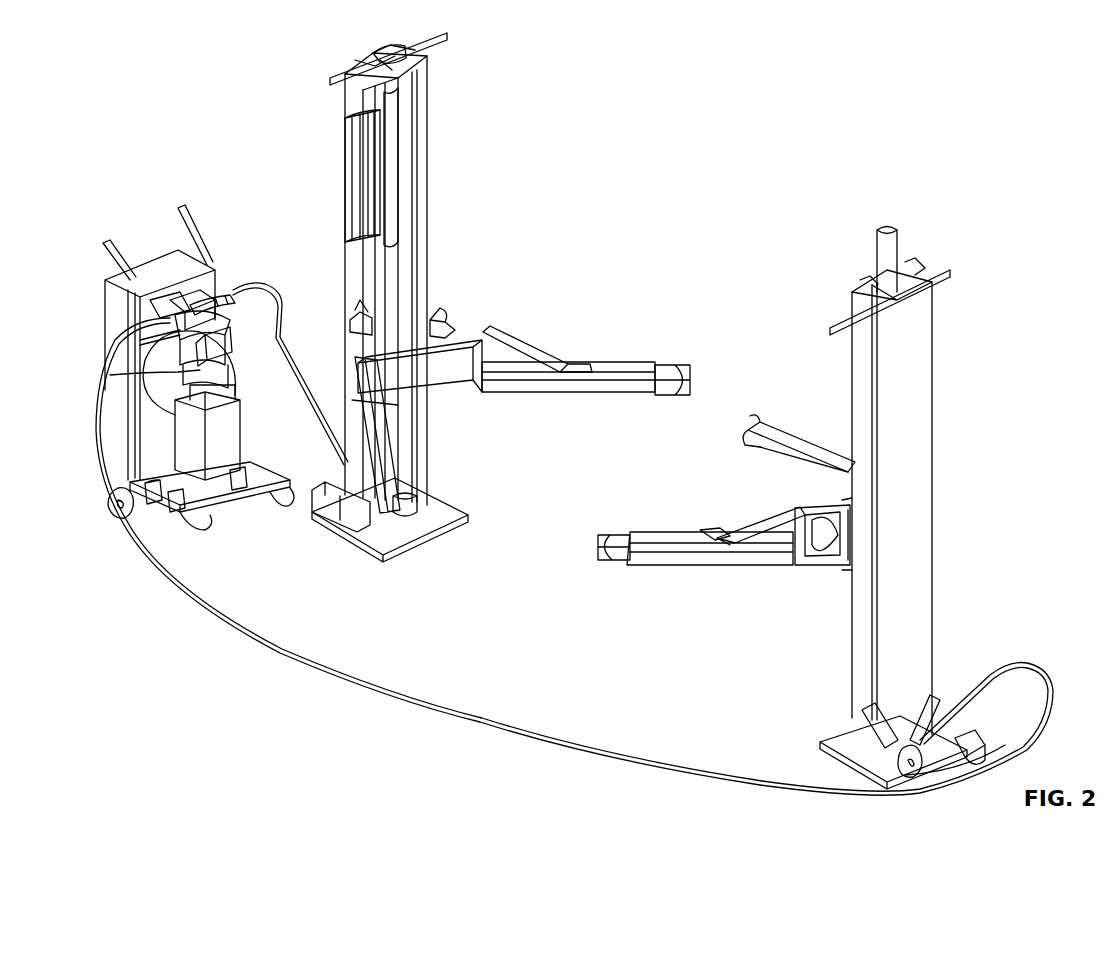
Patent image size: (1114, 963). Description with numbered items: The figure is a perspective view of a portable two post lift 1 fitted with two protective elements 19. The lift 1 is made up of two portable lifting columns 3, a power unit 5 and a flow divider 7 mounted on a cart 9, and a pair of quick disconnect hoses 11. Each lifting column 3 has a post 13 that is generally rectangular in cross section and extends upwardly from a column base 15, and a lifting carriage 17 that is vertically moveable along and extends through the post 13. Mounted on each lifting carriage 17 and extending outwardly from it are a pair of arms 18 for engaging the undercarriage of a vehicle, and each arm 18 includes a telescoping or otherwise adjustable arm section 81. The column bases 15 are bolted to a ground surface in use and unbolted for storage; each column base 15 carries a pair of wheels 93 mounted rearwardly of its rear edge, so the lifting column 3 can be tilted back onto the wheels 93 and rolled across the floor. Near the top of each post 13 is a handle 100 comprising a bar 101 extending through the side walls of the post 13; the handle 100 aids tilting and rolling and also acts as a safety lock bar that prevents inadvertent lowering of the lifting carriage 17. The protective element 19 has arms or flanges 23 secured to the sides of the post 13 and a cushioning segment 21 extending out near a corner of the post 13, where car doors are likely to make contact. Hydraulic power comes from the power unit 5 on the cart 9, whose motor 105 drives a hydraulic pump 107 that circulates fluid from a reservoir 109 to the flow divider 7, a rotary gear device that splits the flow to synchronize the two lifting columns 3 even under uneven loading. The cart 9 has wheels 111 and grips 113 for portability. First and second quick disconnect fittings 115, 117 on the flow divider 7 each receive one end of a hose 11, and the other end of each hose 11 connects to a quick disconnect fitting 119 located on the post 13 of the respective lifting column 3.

The portable two post lift 1 is at (752, 158).
The portable lifting column 3 is at (503, 72).
The power unit 5 is at (230, 392).
The flow divider 7 is at (200, 296).
The cart 9 is at (205, 262).
The quick disconnect hose 11 is at (298, 302).
The post 13 is at (430, 175).
The column base 15 is at (448, 512).
The lifting carriage 17 is at (460, 388).
The arm 18 is at (607, 362).
The protective element 19 is at (332, 185).
The cushioning segment 21 is at (352, 232).
The arms or flanges 23 is at (350, 160).
The adjustable arm section 81 is at (675, 366).
The wheel 93 is at (965, 745).
The handle 100 is at (438, 52).
The bar 101 is at (346, 78).
The motor 105 is at (140, 332).
The hydraulic pump 107 is at (110, 378).
The reservoir 109 is at (225, 505).
The wheel 111 is at (125, 505).
The grip 113 is at (118, 245).
The first quick disconnect fitting 115 is at (165, 295).
The second quick disconnect fitting 117 is at (225, 315).
The quick disconnect fitting 119 is at (920, 740).